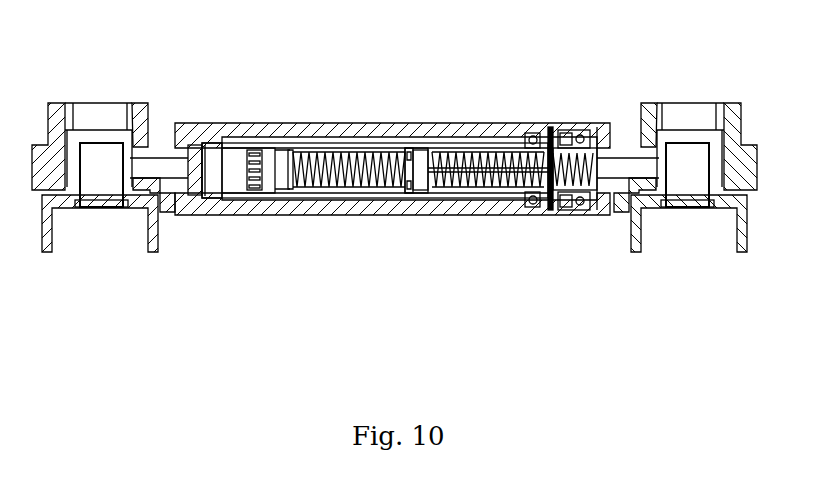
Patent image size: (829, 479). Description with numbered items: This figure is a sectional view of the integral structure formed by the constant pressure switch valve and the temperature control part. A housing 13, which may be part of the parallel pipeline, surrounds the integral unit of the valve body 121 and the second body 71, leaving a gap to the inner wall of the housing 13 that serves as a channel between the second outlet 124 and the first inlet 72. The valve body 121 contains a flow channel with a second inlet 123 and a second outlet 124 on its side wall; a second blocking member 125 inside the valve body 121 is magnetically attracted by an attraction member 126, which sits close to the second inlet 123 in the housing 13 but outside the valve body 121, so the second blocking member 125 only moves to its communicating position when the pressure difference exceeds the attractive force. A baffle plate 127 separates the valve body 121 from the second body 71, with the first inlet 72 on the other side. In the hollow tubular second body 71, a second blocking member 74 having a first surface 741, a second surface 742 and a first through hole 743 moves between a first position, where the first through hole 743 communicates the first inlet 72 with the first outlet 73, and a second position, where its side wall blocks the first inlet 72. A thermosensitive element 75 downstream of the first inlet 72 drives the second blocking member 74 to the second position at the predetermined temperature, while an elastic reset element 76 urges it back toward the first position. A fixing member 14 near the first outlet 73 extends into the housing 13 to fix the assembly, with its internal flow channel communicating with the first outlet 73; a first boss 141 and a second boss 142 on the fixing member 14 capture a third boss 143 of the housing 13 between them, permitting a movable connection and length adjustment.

The housing 13 is at (312, 125).
The fixing member 14 is at (612, 128).
The valve body 121 is at (225, 147).
The second inlet 123 is at (200, 130).
The second outlet 124 is at (262, 148).
The second blocking member 125 is at (213, 177).
The attraction member 126 is at (175, 125).
The baffle plate 127 is at (297, 200).
The second body 71 is at (380, 200).
The first inlet 72 is at (420, 150).
The first outlet 73 is at (567, 125).
The second blocking member 74 is at (443, 155).
The first surface 741 is at (410, 193).
The second surface 742 is at (428, 170).
The first through hole 743 is at (483, 200).
The thermosensitive element 75 is at (500, 190).
The elastic reset element 76 is at (366, 150).
The first boss 141 is at (557, 215).
The second boss 142 is at (575, 215).
The third boss 143 is at (563, 215).